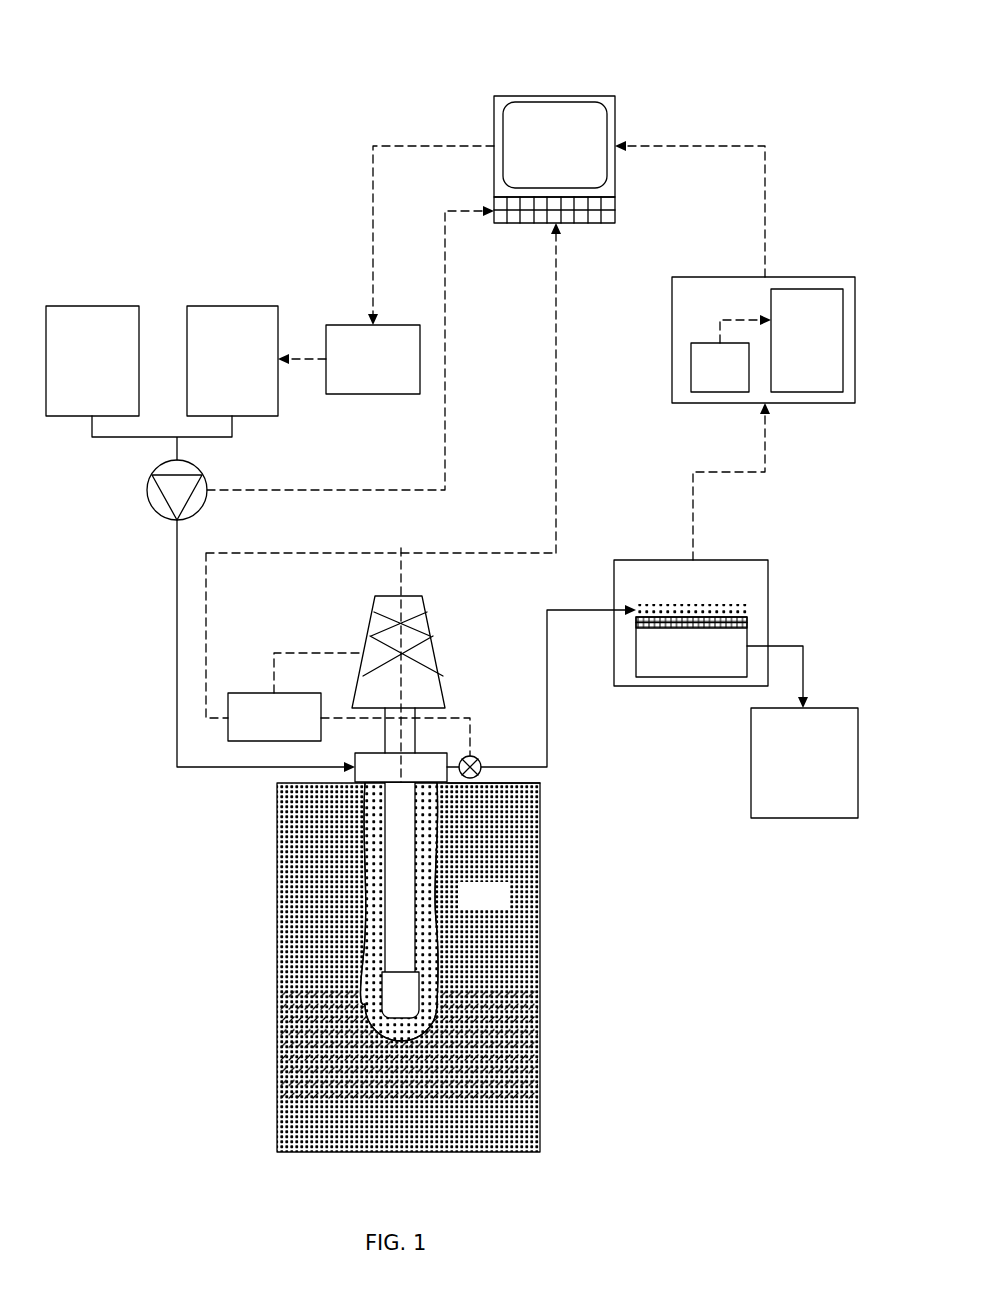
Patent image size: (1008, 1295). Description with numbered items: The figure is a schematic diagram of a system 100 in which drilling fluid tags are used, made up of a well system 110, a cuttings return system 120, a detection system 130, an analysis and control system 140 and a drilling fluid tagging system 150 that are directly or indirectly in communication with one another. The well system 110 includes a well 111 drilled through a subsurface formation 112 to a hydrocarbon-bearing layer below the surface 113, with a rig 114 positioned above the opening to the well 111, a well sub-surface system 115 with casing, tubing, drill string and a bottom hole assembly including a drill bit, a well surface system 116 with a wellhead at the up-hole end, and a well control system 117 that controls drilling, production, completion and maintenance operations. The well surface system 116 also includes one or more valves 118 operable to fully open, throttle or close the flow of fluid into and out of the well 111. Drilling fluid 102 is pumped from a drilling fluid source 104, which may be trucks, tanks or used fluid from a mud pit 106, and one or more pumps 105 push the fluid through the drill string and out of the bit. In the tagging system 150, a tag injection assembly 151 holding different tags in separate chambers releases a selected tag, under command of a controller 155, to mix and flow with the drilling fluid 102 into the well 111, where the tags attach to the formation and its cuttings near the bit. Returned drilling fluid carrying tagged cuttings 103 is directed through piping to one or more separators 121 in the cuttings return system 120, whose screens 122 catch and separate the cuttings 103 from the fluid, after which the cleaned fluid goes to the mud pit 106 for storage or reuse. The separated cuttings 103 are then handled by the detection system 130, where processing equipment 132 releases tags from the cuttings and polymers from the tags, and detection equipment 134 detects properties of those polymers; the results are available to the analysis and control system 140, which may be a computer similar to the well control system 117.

The system 100 is at (146, 44).
The drilling fluid 102 is at (177, 620).
The cuttings 103 is at (430, 874).
The drilling fluid source 104 is at (111, 354).
The pump 105 is at (200, 512).
The mud pit 106 is at (825, 790).
The well system 110 is at (381, 687).
The well 111 is at (362, 826).
The formation 112 is at (505, 907).
The surface 113 is at (529, 782).
The rig 114 is at (432, 626).
The well sub-surface system 115 is at (414, 986).
The well surface system 116 is at (463, 698).
The well control system 117 is at (294, 729).
The valve 118 is at (477, 757).
The cuttings return system 120 is at (729, 589).
The separator 121 is at (711, 666).
The screen 122 is at (746, 628).
The detection system 130 is at (777, 308).
The processing equipment 132 is at (740, 380).
The detection equipment 134 is at (827, 364).
The analysis and control system 140 is at (615, 57).
The drilling fluid tagging system 150 is at (233, 386).
The tag injection assembly 151 is at (252, 364).
The controller 155 is at (392, 370).